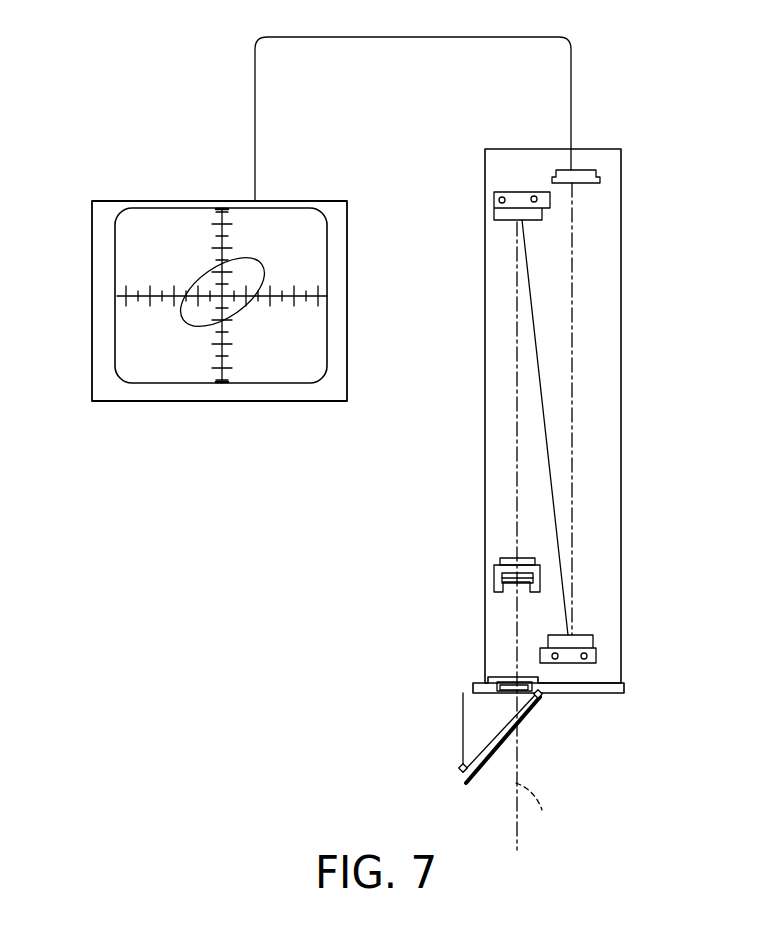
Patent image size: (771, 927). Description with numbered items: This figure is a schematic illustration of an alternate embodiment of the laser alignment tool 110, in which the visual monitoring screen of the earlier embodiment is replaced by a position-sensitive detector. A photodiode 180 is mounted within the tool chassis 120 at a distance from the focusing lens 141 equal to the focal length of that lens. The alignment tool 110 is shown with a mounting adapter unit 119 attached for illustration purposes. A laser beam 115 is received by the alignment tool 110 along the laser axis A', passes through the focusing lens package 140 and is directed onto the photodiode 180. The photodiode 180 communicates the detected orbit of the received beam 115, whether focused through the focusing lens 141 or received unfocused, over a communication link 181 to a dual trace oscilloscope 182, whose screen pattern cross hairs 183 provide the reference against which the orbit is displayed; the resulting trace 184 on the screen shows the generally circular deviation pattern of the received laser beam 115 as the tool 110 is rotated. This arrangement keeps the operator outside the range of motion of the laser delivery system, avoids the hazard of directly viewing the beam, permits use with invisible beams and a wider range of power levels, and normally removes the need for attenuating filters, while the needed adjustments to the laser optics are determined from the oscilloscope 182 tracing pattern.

The alignment tool 110 is at (632, 325).
The tool chassis 120 is at (625, 451).
The photodiode 180 is at (580, 170).
The communication link 181 is at (473, 37).
The dual trace oscilloscope 182 is at (290, 201).
The screen pattern cross hairs 183 is at (154, 298).
The display trace 184 is at (196, 326).
The focusing lens package 140 is at (486, 571).
The focusing lens 141 is at (510, 558).
The mounting adapter unit 119 is at (472, 732).
The laser beam 115 is at (516, 756).